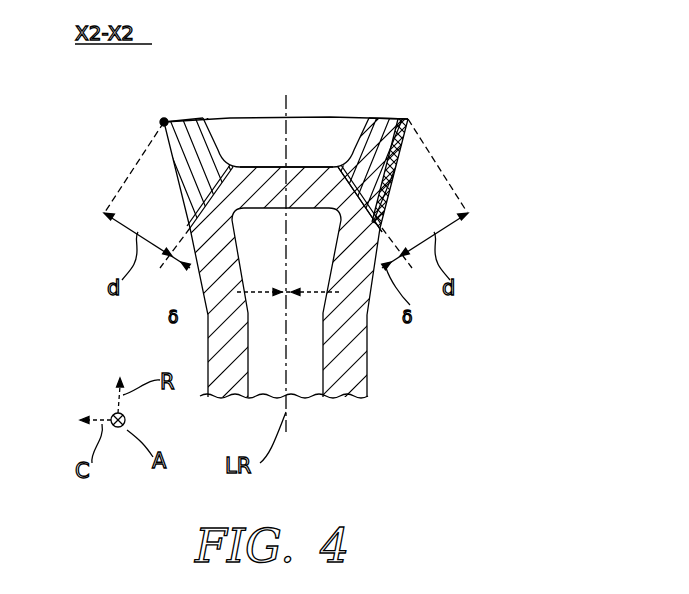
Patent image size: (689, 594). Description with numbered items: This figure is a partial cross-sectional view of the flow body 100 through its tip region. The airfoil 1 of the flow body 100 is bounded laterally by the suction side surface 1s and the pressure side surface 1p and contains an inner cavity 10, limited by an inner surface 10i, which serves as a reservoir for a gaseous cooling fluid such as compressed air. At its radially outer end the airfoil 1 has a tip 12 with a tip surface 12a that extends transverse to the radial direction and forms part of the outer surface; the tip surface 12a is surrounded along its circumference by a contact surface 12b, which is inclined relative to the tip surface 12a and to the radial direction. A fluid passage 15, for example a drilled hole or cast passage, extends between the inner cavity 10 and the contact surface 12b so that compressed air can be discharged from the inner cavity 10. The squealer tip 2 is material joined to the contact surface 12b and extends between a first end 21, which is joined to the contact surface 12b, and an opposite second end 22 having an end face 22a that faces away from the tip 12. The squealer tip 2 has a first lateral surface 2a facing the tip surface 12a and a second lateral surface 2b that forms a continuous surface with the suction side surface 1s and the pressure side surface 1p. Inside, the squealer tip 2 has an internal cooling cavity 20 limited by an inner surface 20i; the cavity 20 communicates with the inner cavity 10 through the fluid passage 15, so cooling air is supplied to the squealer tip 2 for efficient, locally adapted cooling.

The flow body 100 is at (460, 105).
The airfoil 1 is at (289, 282).
The suction side surface 1s is at (208, 358).
The pressure side surface 1p is at (368, 342).
The inner cavity 10 is at (300, 343).
The inner surface 10i is at (323, 368).
The tip 12 is at (297, 117).
The tip surface 12a is at (276, 161).
The contact surface 12b is at (198, 203).
The fluid passage 15 is at (315, 157).
The squealer tip 2 is at (192, 124).
The first lateral surface 2a is at (383, 109).
The second lateral surface 2b is at (388, 188).
The internal cooling cavity 20 is at (422, 158).
The inner surface 20i is at (388, 128).
The first end 21 is at (282, 288).
The second end 22 is at (321, 225).
The end face 22a is at (162, 120).